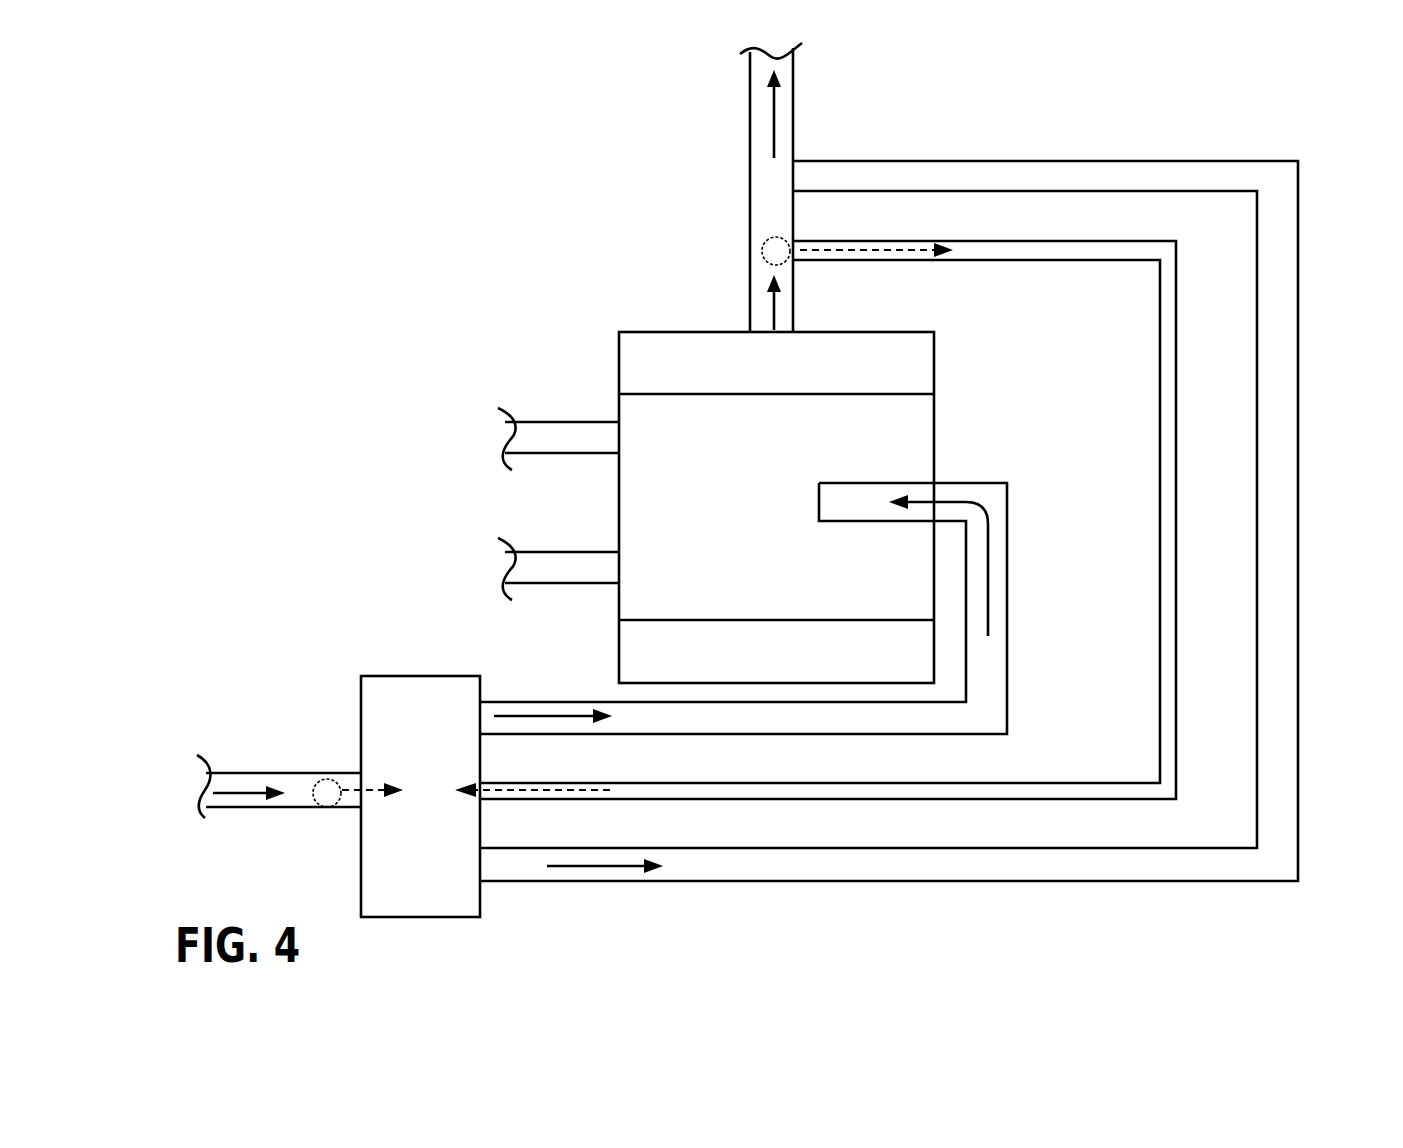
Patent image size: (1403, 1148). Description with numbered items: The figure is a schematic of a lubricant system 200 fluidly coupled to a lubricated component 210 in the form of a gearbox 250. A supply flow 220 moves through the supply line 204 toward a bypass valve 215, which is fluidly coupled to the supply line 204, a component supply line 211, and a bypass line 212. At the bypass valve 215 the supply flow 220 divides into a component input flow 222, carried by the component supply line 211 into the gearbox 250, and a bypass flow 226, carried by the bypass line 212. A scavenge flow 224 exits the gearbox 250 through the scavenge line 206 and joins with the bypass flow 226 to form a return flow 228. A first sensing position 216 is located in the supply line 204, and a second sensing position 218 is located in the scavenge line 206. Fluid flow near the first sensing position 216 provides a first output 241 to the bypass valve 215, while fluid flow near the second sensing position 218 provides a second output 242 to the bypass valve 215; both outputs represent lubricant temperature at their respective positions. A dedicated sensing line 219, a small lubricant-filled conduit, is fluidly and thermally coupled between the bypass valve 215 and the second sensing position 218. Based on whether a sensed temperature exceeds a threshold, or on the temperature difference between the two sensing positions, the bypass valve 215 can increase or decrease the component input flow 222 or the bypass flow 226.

The lubricant system 200 is at (1338, 178).
The supply line 204 is at (275, 772).
The scavenge line 206 is at (750, 273).
The lubricated component 210 is at (513, 263).
The component supply line 211 is at (1008, 713).
The bypass line 212 is at (1277, 490).
The bypass valve 215 is at (402, 852).
The first sensing position 216 is at (313, 793).
The second sensing position 218 is at (765, 245).
The sensing line 219 is at (855, 792).
The supply flow 220 is at (238, 797).
The component input flow 222 is at (989, 608).
The scavenge flow 224 is at (773, 307).
The bypass flow 226 is at (607, 868).
The return flow 228 is at (773, 118).
The first output 241 is at (352, 790).
The second output 242 is at (838, 250).
The gearbox 250 is at (645, 326).